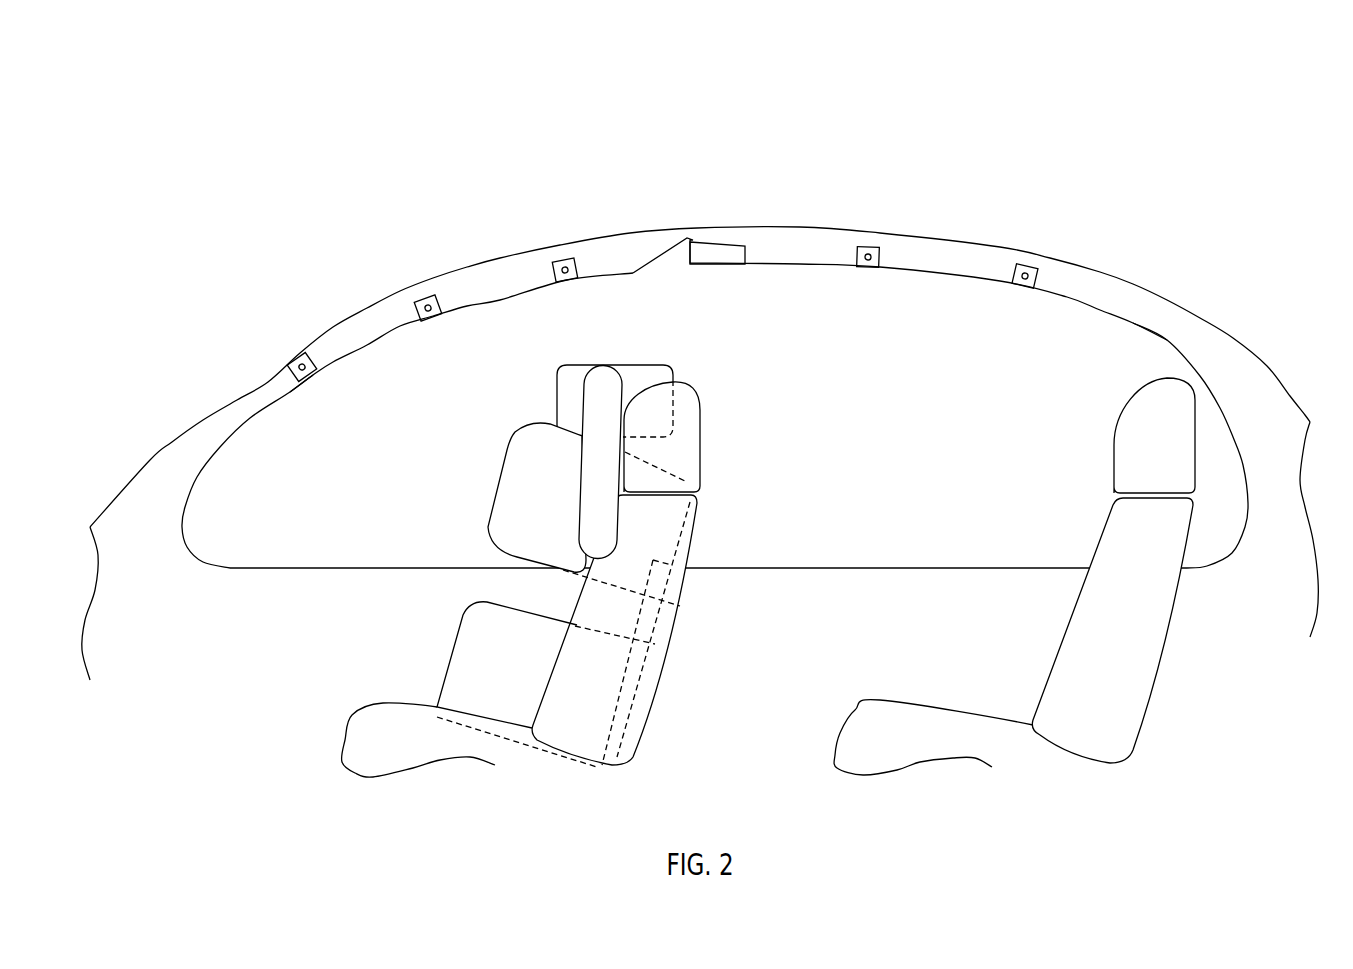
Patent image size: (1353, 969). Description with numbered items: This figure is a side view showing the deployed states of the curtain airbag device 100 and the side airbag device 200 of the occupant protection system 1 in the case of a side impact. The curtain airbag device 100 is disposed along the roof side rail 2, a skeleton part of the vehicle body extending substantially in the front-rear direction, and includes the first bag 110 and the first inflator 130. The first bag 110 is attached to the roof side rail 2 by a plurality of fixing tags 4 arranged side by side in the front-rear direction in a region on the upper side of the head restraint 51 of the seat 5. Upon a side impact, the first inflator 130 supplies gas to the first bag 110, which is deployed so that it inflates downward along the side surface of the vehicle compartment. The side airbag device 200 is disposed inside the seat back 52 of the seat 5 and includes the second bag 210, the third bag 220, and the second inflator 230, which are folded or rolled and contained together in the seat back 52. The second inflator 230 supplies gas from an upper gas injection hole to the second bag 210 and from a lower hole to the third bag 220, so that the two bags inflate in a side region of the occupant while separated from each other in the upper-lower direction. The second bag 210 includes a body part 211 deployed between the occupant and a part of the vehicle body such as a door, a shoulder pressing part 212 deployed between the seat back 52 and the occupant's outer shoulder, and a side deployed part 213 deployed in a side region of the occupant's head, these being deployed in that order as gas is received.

The occupant protection system 1 is at (1207, 178).
The curtain airbag device 100 is at (1084, 291).
The roof side rail 2 is at (808, 248).
The first inflator 130 is at (718, 242).
The fixing tags 4 is at (415, 316).
The first bag 110 is at (930, 547).
The seat 5 is at (561, 581).
The head restraint 51 is at (688, 452).
The seat back 52 is at (645, 716).
The side airbag device 200 is at (430, 378).
The second bag 210 is at (529, 361).
The body part 211 is at (500, 453).
The shoulder pressing part 212 is at (560, 412).
The side deployed part 213 is at (562, 383).
The third bag 220 is at (452, 645).
The second inflator 230 is at (680, 609).